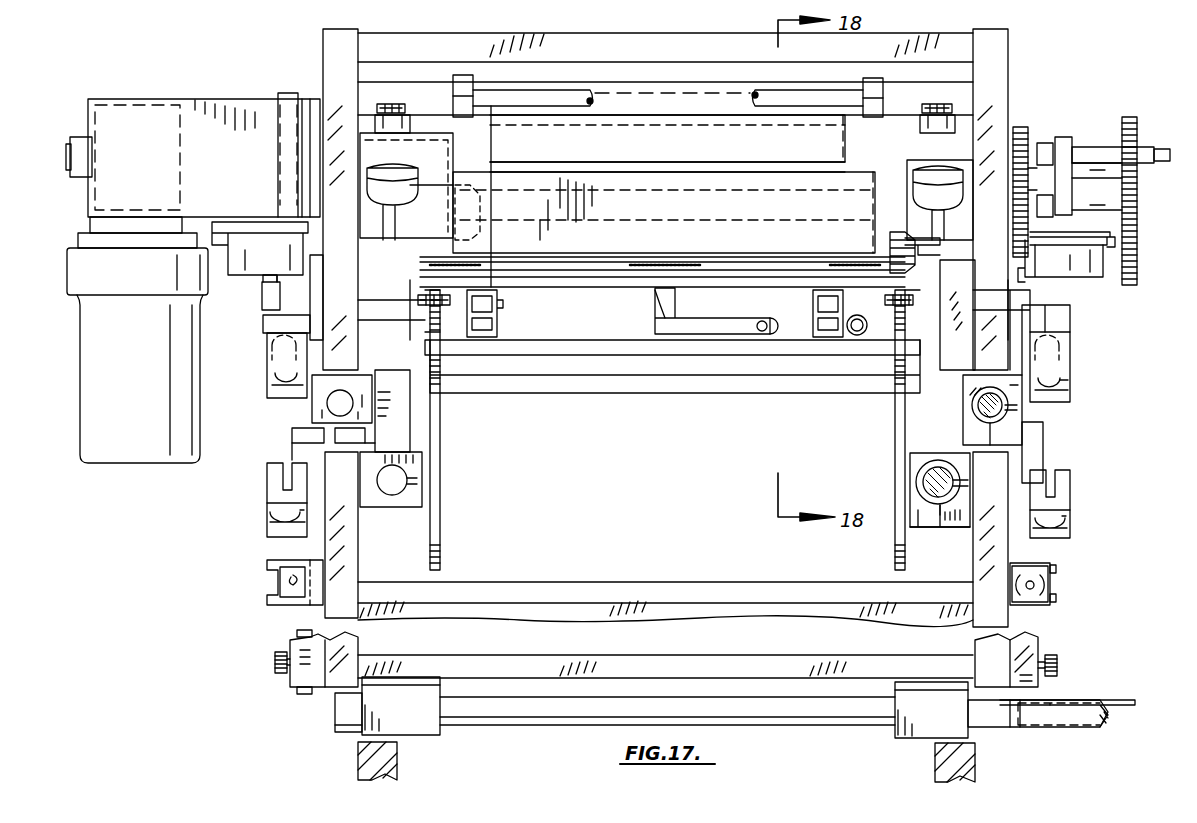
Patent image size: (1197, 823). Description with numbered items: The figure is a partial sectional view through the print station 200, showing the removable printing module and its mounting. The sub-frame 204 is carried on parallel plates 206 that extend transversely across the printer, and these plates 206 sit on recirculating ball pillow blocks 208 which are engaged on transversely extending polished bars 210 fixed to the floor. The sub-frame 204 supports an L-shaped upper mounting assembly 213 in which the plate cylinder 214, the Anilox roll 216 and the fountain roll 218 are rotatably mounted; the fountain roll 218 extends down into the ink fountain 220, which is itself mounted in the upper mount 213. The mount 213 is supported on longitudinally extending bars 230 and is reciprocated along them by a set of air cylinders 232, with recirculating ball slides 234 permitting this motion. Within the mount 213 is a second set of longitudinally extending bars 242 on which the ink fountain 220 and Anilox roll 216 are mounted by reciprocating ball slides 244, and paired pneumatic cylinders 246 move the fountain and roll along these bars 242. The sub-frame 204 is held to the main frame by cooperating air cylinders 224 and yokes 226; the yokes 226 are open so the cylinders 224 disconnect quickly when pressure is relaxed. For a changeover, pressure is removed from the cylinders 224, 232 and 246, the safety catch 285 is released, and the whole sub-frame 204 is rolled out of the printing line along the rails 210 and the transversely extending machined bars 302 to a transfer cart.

The print station 200 is at (246, 660).
The sub-frame 204 is at (345, 656).
The parallel plates 206 is at (645, 666).
The recirculating ball pillow blocks 208 is at (420, 730).
The polished bars 210 is at (515, 730).
The L-shaped upper mounting assembly 213 is at (1014, 85).
The plate cylinder 214 is at (490, 126).
The Anilox roll 216 is at (766, 178).
The fountain roll 218 is at (690, 174).
The ink fountain 220 is at (612, 181).
The air cylinder 224 is at (1050, 575).
The yoke 226 is at (270, 608).
The longitudinally extending bars 230 is at (400, 476).
The air cylinders 232 is at (272, 515).
The recirculating ball slides 234 is at (918, 530).
The second set of longitudinally extending bars 242 is at (335, 406).
The reciprocating ball slides 244 is at (312, 433).
The pneumatic cylinders 246 is at (267, 378).
The safety catch 285 is at (295, 680).
The machined bars 302 is at (1068, 730).